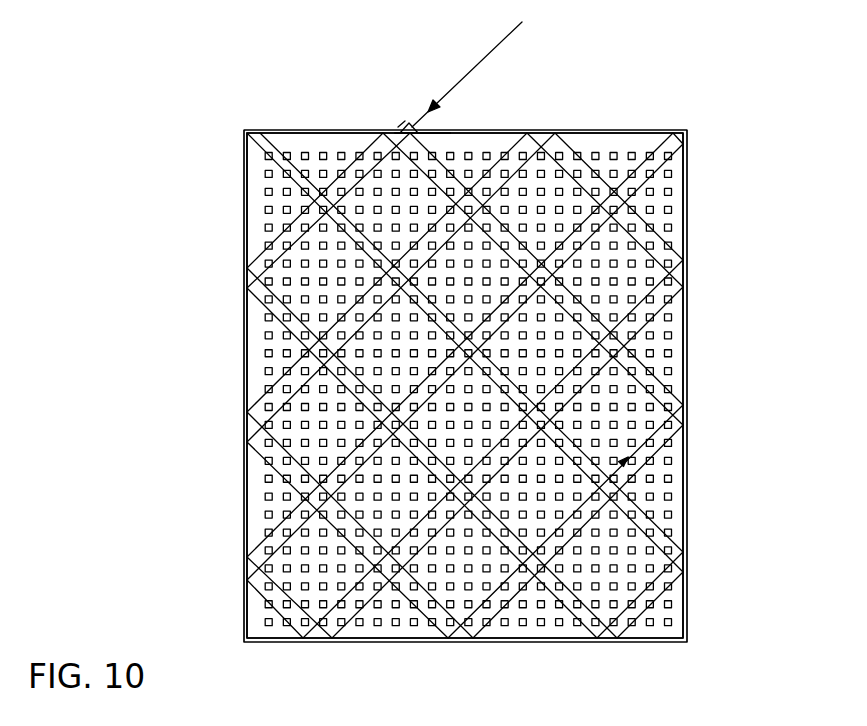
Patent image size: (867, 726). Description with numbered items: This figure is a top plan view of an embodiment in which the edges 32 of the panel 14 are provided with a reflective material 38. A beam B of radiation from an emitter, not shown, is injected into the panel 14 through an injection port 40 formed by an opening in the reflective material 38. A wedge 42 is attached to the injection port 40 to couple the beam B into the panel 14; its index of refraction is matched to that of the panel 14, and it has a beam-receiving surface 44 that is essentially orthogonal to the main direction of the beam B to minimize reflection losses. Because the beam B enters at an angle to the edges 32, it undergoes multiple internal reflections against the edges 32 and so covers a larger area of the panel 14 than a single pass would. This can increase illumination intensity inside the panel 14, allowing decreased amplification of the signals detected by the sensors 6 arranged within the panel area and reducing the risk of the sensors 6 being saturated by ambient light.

The panel 14 is at (687, 135).
The light sensors 6 is at (685, 542).
The edges 32 is at (608, 130).
The reflective material 38 is at (492, 130).
The injection port 40 is at (423, 135).
The beam-receiving surface 44 is at (420, 118).
The wedge 42 is at (402, 125).
The beam B is at (497, 47).